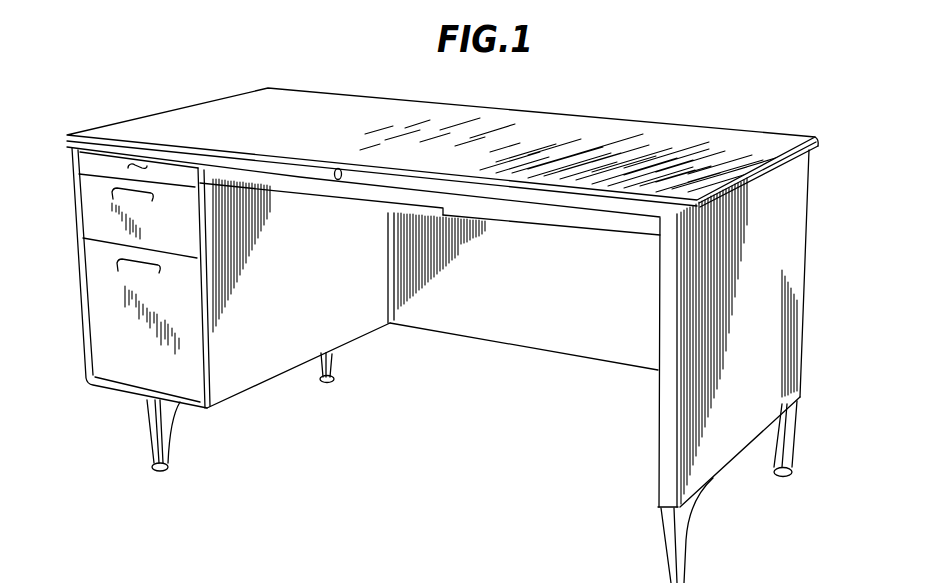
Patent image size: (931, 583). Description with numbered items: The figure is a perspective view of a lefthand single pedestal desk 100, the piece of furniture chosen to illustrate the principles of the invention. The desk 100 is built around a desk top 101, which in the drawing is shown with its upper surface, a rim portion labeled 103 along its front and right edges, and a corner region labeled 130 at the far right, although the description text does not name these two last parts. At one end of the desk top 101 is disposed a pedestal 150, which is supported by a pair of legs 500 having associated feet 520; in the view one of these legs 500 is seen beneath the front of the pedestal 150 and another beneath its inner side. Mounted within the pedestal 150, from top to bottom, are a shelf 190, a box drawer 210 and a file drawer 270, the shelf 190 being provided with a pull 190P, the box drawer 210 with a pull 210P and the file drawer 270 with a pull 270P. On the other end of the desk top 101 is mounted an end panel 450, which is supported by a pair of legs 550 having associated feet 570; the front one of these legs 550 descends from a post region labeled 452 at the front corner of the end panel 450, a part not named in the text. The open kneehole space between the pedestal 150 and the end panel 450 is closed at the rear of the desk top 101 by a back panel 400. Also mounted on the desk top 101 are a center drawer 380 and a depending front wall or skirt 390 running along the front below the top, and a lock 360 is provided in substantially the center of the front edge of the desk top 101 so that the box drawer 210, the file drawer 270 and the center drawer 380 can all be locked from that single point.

The single pedestal desk 100 is at (168, 77).
The desk top 101 is at (536, 130).
The top edge rim 103 is at (792, 158).
The top corner 130 is at (803, 139).
The pedestal 150 is at (282, 330).
The shelf 190 is at (95, 162).
The pull 190P is at (128, 166).
The box drawer 210 is at (90, 193).
The pull 210P is at (113, 197).
The file drawer 270 is at (113, 331).
The pull 270P is at (117, 270).
The lock 360 is at (339, 168).
The center drawer 380 is at (333, 195).
The front wall or skirt 390 is at (527, 215).
The back panel 400 is at (525, 318).
The end panel 450 is at (784, 258).
The corner post 452 is at (662, 470).
The legs 500 is at (170, 430).
The feet 520 is at (168, 469).
The legs 550 is at (797, 420).
The feet 570 is at (792, 472).